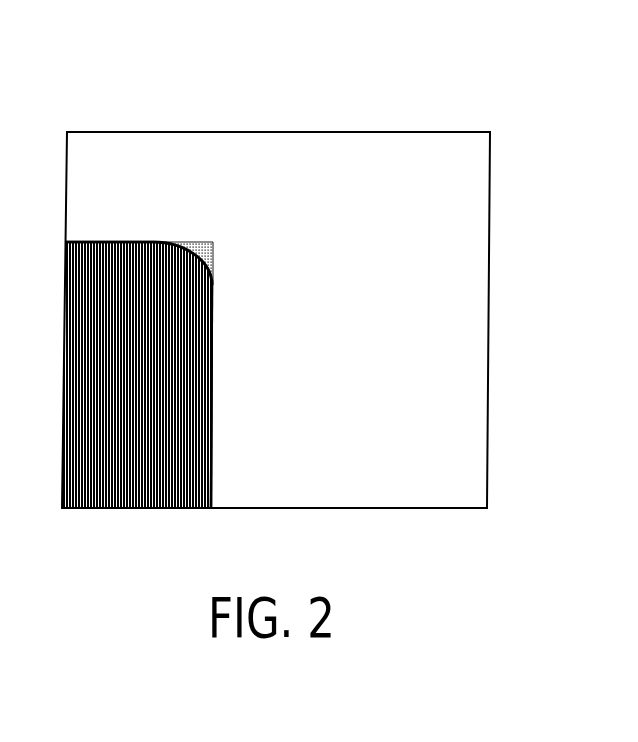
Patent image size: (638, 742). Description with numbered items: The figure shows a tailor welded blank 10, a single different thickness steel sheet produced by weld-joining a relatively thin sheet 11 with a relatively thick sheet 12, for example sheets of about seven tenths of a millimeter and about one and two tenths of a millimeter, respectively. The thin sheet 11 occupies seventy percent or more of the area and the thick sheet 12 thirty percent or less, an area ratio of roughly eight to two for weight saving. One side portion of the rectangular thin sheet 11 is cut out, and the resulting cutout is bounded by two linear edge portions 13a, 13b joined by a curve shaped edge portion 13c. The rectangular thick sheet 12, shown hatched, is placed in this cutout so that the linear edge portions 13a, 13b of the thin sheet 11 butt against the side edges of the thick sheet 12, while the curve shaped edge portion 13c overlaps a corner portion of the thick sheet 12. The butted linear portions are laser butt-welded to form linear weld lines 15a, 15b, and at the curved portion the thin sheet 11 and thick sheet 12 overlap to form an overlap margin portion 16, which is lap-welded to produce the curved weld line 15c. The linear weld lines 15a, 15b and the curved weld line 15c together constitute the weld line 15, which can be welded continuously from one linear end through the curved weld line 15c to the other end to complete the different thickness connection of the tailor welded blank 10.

The tailor welded blank 10 is at (427, 99).
The thin sheet 11 is at (279, 131).
The thick sheet 12 is at (137, 508).
The linear edge portion 13a is at (126, 206).
The linear edge portion 13b is at (283, 396).
The curve shaped edge portion 13c is at (180, 257).
The weld line 15 is at (215, 372).
The linear weld line 15a is at (103, 242).
The linear weld line 15b is at (213, 409).
The curved weld line 15c is at (201, 242).
The overlap margin portion 16 is at (214, 256).